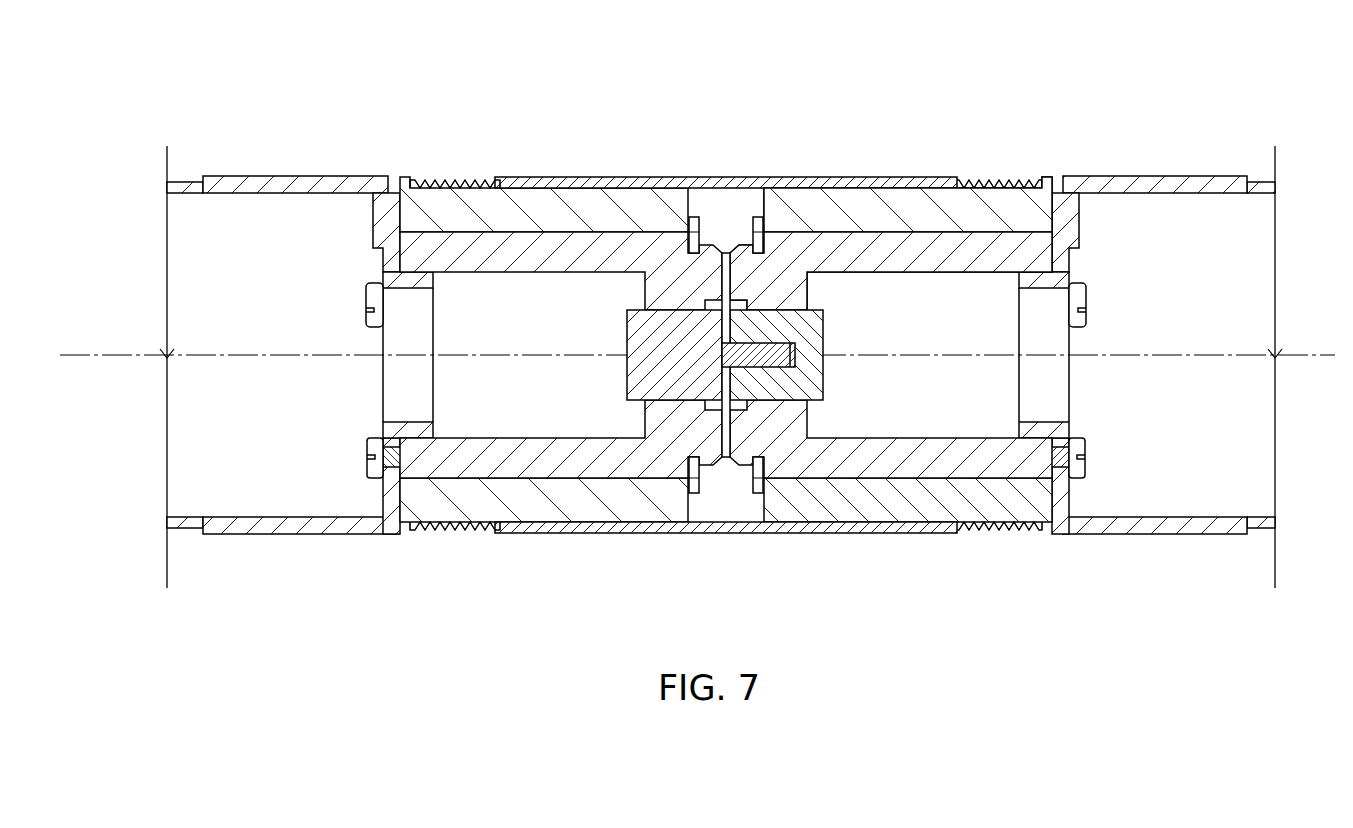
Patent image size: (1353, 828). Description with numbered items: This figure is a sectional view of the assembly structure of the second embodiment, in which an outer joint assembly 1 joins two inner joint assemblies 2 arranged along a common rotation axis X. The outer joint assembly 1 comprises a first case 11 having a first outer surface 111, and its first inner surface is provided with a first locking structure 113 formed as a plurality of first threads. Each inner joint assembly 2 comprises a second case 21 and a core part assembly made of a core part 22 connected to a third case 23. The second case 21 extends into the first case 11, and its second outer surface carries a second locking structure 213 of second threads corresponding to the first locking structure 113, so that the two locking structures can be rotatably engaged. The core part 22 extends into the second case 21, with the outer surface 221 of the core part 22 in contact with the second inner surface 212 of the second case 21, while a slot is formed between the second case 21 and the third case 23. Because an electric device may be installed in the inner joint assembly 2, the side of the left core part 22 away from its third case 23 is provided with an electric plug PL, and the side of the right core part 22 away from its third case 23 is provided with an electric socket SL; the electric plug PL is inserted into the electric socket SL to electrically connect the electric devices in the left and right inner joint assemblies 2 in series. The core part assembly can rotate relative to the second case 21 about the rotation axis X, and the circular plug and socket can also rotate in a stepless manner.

The outer joint assembly 1 is at (786, 324).
The inner joint assembly 2 is at (742, 333).
The first case 11 is at (892, 177).
The second case 21 is at (797, 182).
The core part 22 is at (585, 465).
The third case 23 is at (1152, 187).
The first outer surface 111 is at (678, 182).
The first locking structure 113 is at (993, 178).
The second locking structure 213 is at (993, 178).
The second inner surface 212 is at (928, 232).
The outer surface of the core part 221 is at (928, 232).
The electric plug PL is at (627, 333).
The electric socket SL is at (823, 323).
The rotation axis X is at (1168, 347).